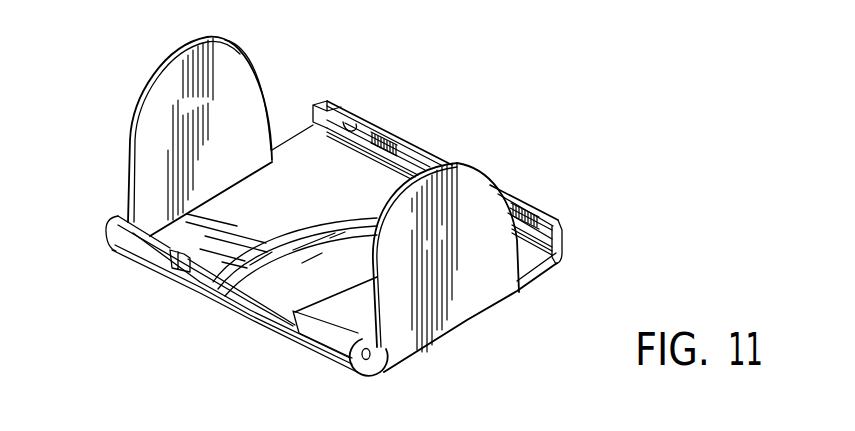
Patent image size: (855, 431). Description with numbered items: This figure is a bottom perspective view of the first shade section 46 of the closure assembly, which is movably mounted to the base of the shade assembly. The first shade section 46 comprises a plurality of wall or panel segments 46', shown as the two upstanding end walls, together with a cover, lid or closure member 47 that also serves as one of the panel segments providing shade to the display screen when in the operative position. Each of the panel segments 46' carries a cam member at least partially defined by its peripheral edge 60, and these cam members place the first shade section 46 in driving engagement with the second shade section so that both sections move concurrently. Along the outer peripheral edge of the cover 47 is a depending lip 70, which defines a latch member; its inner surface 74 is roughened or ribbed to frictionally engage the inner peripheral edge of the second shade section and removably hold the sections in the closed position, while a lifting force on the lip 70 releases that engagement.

The first shade section 46 is at (359, 238).
The wall or panel segments 46' is at (304, 197).
The cover or closure member 47 is at (288, 155).
The peripheral edge 60 is at (250, 66).
The depending lip 70 is at (415, 141).
The inner surface 74 is at (343, 120).